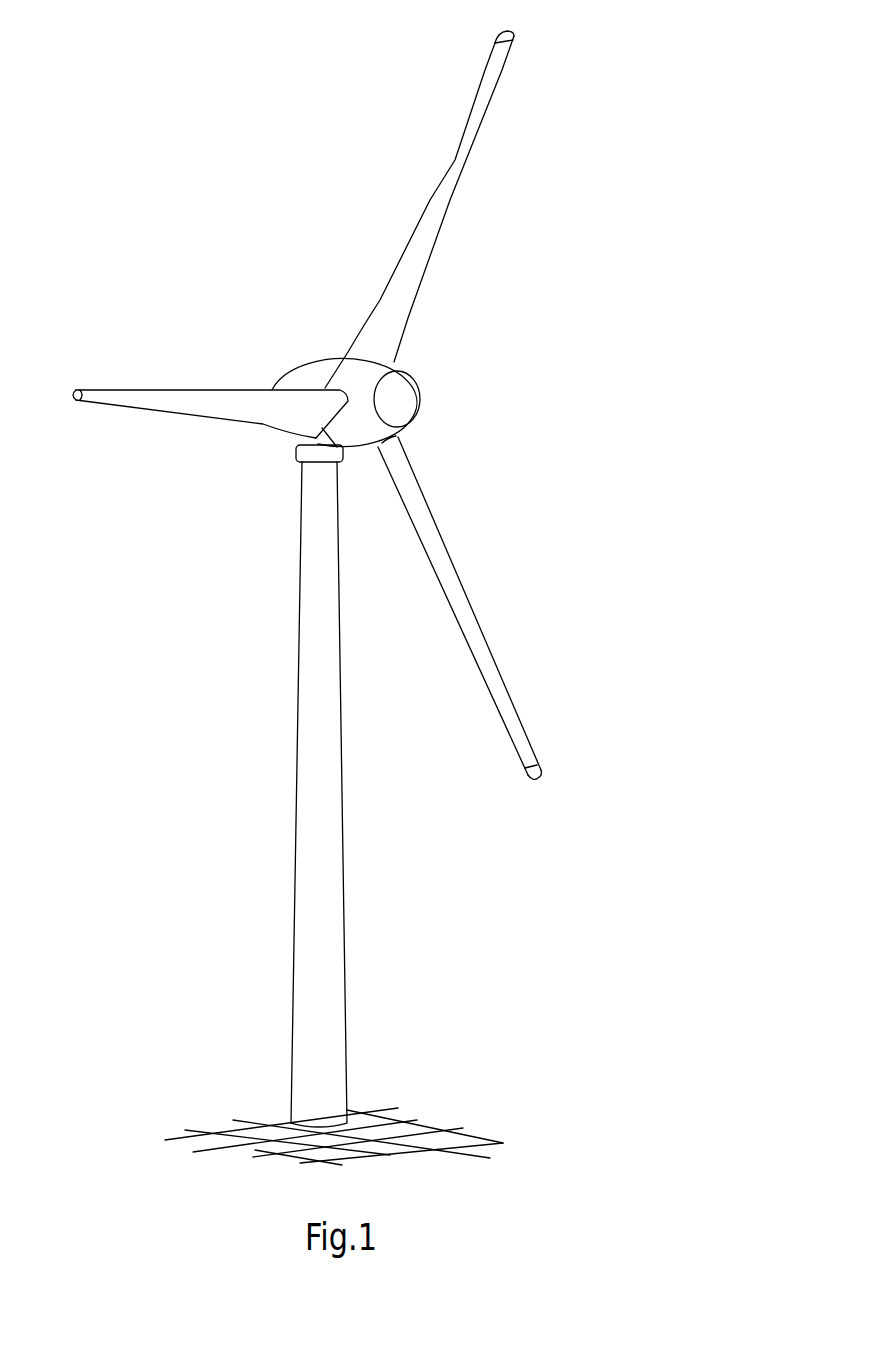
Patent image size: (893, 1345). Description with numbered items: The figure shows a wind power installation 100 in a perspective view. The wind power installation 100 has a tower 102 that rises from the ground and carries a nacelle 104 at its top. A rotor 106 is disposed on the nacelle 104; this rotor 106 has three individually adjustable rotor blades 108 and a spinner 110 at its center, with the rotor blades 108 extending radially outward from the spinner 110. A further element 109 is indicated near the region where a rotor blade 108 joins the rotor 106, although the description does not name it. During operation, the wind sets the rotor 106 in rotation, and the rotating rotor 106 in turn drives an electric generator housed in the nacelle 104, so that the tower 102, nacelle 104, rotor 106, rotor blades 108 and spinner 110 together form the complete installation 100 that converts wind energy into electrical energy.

The wind power installation 100 is at (257, 527).
The tower 102 is at (332, 868).
The nacelle 104 is at (315, 380).
The rotor 106 is at (485, 318).
The rotor blades 108 is at (455, 163).
The pitch bearing / blade root 109 is at (390, 435).
The spinner 110 is at (402, 400).